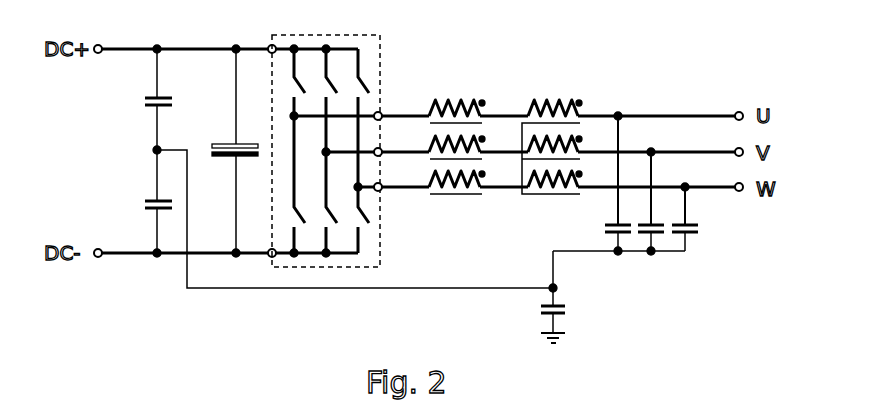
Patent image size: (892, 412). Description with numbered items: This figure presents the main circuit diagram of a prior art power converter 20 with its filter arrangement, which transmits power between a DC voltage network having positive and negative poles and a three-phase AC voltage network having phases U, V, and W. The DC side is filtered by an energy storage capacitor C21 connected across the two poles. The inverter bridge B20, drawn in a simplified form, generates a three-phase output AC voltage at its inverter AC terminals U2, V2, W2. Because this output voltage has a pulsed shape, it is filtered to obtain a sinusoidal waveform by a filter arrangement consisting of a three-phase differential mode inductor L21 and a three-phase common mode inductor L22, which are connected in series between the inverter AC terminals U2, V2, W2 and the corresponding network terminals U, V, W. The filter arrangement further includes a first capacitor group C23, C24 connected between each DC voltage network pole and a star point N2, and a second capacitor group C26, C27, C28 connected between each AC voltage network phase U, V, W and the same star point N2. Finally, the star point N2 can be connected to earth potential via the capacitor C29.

The power converter 20 is at (707, 38).
The inverter bridge B20 is at (331, 31).
The energy storage capacitor C21 is at (228, 151).
The first capacitor group capacitor C23 is at (145, 99).
The first capacitor group capacitor C24 is at (145, 201).
The second capacitor group capacitor C26 is at (628, 209).
The second capacitor group capacitor C27 is at (665, 227).
The second capacitor group capacitor C28 is at (702, 232).
The capacitor C29 is at (531, 297).
The 3-phase differential mode inductor L21 is at (457, 134).
The 3-phase common mode inductor L22 is at (552, 134).
The inverter AC terminal U2 is at (359, 103).
The inverter AC terminal V2 is at (375, 142).
The inverter AC terminal W2 is at (391, 176).
The star point N2 is at (355, 220).